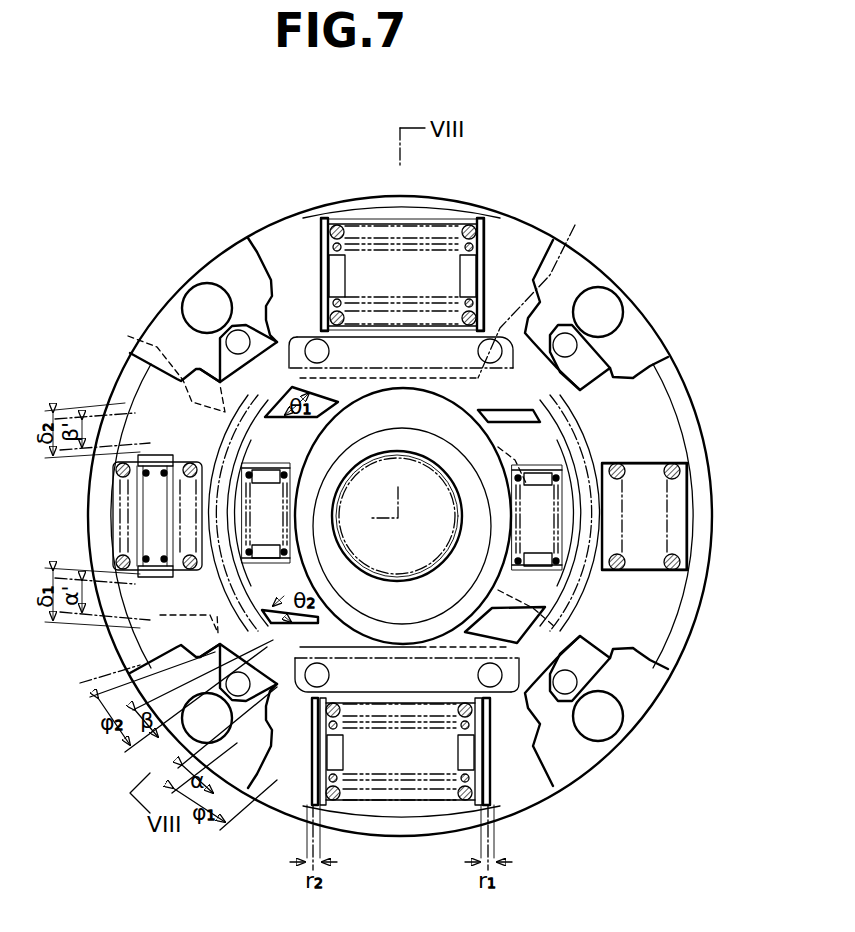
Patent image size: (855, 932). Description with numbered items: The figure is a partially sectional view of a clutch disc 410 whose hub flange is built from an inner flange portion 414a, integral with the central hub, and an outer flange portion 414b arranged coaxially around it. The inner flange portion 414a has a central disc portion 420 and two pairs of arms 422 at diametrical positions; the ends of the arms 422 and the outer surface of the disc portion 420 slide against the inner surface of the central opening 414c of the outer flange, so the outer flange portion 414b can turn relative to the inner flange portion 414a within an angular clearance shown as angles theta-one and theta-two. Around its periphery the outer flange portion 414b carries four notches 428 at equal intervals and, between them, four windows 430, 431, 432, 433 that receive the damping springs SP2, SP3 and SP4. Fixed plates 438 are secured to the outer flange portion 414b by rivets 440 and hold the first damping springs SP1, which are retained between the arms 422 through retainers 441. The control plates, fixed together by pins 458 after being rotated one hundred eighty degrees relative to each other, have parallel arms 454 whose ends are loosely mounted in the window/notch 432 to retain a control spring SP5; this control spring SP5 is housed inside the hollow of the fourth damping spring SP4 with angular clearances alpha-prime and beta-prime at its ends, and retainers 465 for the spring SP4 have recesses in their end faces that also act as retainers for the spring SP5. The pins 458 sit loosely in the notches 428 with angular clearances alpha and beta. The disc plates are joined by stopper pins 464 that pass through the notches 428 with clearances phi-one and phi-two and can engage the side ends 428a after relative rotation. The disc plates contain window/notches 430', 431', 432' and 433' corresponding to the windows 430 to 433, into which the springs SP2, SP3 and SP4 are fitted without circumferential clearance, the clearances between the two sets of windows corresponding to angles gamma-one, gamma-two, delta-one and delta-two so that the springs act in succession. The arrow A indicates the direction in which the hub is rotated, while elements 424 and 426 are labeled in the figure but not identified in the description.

The clutch disc 410 is at (698, 394).
The inner flange portion 414a is at (343, 438).
The outer flange portion 414b is at (301, 225).
The inner opening of the outer flange 414c is at (265, 410).
The central disc portion 420 is at (353, 603).
The arms 422 is at (300, 455).
The spring seat 424 is at (220, 450).
The hub ring 426 is at (390, 389).
The notches 428 is at (200, 365).
The side ends of the notch 428a is at (157, 663).
The window 430 is at (482, 248).
The window/notch of the disc plate 430' is at (402, 274).
The window 431 is at (471, 524).
The window/notch of the disc plate 431' is at (402, 785).
The window/notch 432 is at (168, 502).
The window/notch of the disc plate 432' is at (117, 516).
The window/notch 433 is at (677, 548).
The window/notch of the disc plate 433' is at (688, 516).
The fixed plates 438 is at (563, 243).
The rivets 440 is at (528, 332).
The retainers 441 is at (533, 567).
The parallel arms 454 is at (152, 350).
The pins 458 is at (250, 700).
The stopper pins 464 is at (150, 678).
The retainers 465 is at (95, 610).
The direction of rotation A is at (467, 530).
The first damping springs SP1 is at (280, 478).
The second damping spring SP2 is at (478, 240).
The third damping spring SP3 is at (463, 793).
The fourth damping spring SP4 is at (112, 465).
The control spring SP5 is at (114, 468).